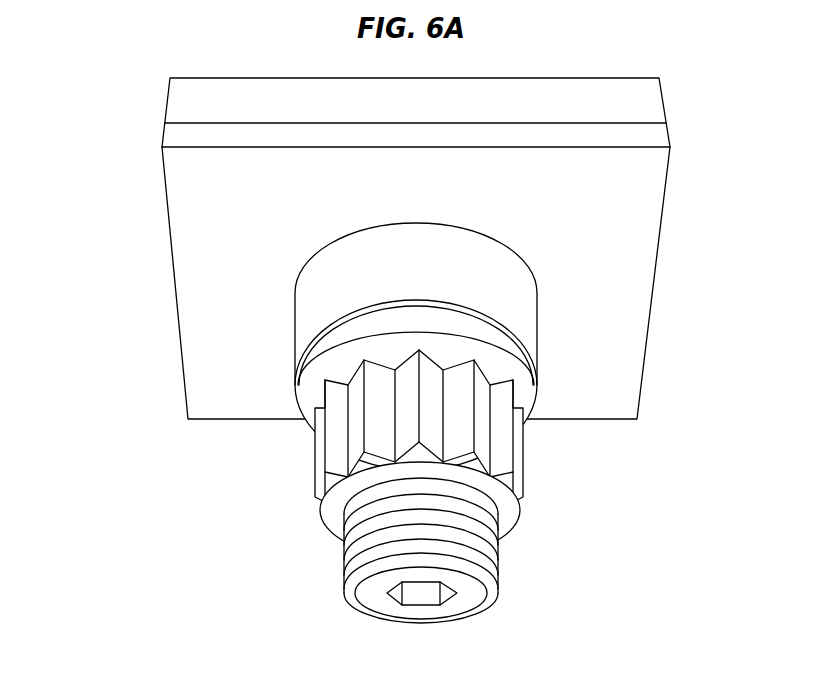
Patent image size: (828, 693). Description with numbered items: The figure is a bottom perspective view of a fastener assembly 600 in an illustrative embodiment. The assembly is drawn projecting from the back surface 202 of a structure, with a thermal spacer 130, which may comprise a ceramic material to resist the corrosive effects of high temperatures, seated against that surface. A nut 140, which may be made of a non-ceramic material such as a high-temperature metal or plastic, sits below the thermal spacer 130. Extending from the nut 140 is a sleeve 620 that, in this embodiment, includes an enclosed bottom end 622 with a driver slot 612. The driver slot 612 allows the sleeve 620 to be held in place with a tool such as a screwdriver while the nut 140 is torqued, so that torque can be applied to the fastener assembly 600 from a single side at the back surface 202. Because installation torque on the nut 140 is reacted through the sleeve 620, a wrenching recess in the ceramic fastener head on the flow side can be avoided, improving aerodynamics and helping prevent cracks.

The fastener assembly 600 is at (96, 159).
The back surface 202 is at (617, 267).
The thermal spacer 130 is at (295, 317).
The nut 140 is at (309, 479).
The sleeve 620 is at (339, 586).
The enclosed bottom end 622 is at (468, 589).
The driver slot 612 is at (427, 596).